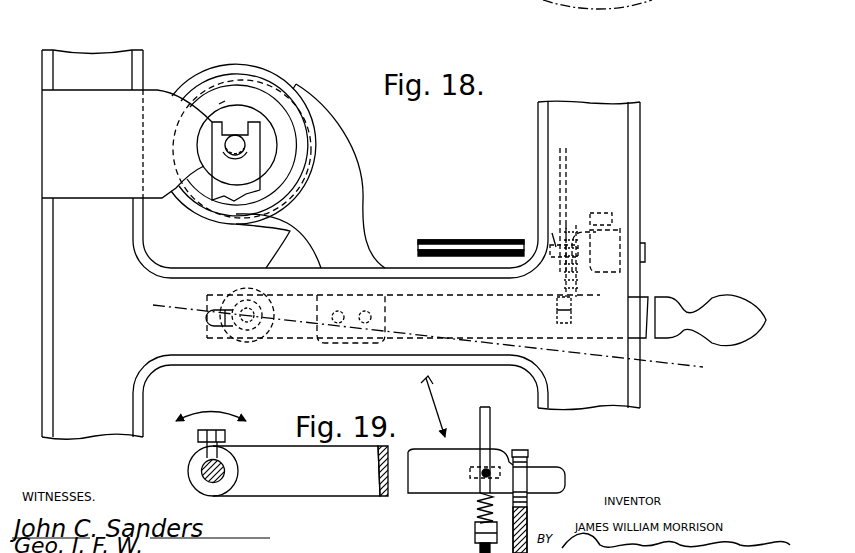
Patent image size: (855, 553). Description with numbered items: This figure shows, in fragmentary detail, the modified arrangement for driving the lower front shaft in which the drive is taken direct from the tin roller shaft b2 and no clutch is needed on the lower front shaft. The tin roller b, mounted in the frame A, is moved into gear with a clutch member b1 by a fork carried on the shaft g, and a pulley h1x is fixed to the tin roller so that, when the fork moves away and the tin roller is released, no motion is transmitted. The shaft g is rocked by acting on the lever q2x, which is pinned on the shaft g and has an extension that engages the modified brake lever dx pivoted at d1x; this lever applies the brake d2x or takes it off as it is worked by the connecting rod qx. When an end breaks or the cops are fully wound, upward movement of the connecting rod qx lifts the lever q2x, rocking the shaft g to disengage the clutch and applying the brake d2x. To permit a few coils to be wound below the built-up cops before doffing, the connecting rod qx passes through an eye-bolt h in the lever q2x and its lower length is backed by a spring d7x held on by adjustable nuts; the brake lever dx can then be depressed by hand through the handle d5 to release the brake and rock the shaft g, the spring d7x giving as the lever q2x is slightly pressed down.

In FIG. 18, the frame body A is at (112, 248).
In FIG. 18, the tin roller b is at (291, 136).
In FIG. 18, the clutch member b1 is at (251, 82).
In FIG. 18, the tin roller shaft b2 is at (231, 147).
In FIG. 18, the pulley h1x is at (221, 104).
In FIG. 18, the brake d2x is at (344, 160).
In FIG. 18, the brake lever dx is at (398, 302).
In FIG. 19, the brake lever dx is at (529, 519).
In FIG. 18, the pivot d1x is at (207, 332).
In FIG. 18, the shaft g is at (485, 248).
In FIG. 19, the shaft g is at (203, 468).
In FIG. 18, the spring pin h is at (552, 247).
In FIG. 19, the spring pin h is at (470, 467).
In FIG. 18, the connecting rod qx is at (570, 162).
In FIG. 19, the connecting rod qx is at (494, 438).
In FIG. 18, the lever q2x is at (578, 228).
In FIG. 19, the lever q2x is at (313, 487).
In FIG. 18, the spring d7x is at (547, 280).
In FIG. 19, the spring d7x is at (473, 508).
In FIG. 18, the handle d5 is at (683, 308).